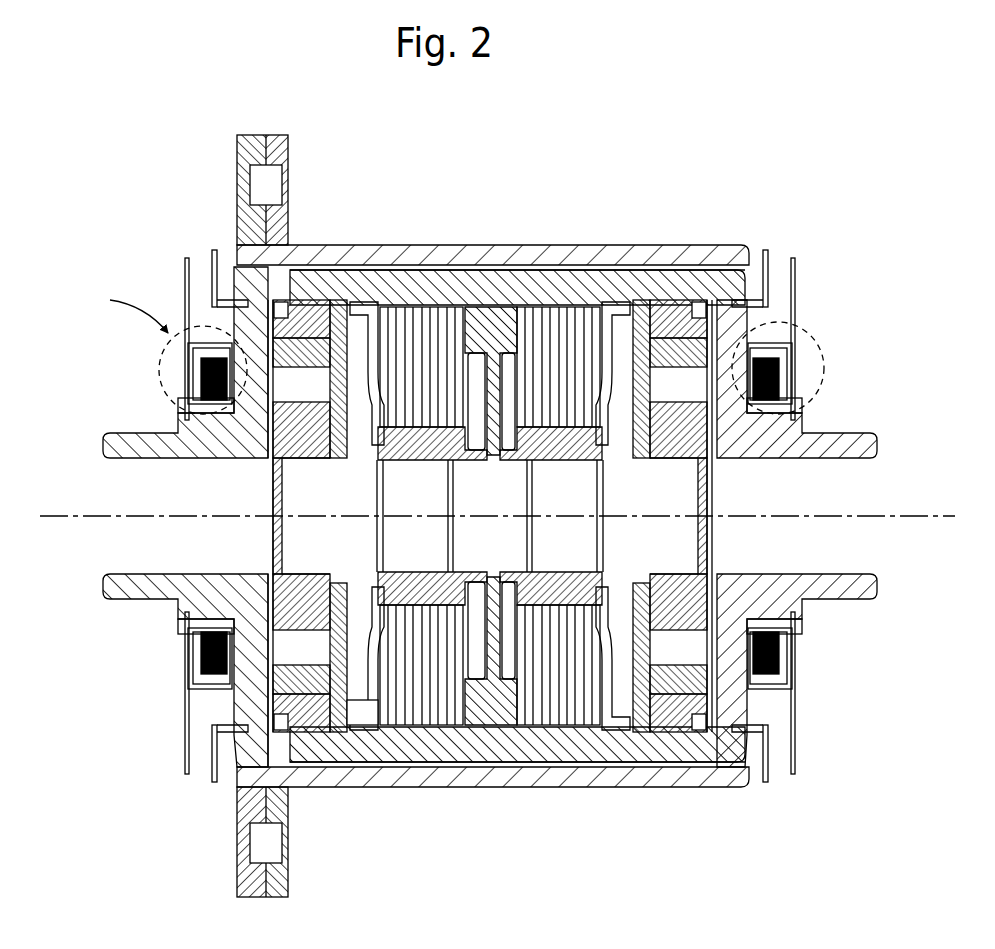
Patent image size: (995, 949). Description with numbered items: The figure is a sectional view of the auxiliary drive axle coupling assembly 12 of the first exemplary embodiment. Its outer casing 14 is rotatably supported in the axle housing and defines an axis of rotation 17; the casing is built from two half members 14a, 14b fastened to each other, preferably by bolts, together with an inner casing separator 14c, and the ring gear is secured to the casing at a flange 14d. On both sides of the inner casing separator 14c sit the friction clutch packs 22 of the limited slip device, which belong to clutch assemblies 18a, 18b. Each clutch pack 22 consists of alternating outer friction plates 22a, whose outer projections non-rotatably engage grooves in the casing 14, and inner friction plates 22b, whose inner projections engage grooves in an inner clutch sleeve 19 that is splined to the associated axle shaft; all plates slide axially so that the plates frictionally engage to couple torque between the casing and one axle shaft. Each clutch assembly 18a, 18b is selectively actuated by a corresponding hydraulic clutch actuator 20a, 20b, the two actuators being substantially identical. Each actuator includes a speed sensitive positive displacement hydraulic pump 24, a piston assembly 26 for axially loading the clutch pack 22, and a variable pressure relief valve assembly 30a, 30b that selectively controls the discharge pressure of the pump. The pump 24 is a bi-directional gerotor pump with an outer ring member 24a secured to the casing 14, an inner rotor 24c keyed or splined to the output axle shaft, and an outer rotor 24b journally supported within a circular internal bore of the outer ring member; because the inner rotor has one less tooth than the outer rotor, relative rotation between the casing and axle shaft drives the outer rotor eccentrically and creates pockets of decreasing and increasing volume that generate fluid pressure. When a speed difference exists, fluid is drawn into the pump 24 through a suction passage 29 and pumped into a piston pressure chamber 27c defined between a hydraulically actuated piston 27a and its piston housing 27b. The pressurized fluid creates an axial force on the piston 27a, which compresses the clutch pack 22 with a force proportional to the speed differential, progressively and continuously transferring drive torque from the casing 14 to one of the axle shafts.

The auxiliary drive axle coupling assembly 12 is at (522, 162).
The casing 14 is at (500, 246).
The half member 14a is at (182, 608).
The half member 14b is at (716, 770).
The inner casing separator 14c is at (535, 745).
The flange 14d is at (290, 880).
The axis of rotation 17 is at (80, 516).
The clutch assembly 18a is at (410, 300).
The clutch assembly 18b is at (598, 300).
The inner clutch sleeve 19 is at (410, 462).
The hydraulic clutch actuator 20a is at (366, 300).
The hydraulic clutch actuator 20b is at (690, 288).
The friction clutch pack 22 is at (443, 300).
The outer friction plate 22a is at (395, 727).
The inner friction plate 22b is at (432, 570).
The speed sensitive positive displacement hydraulic pump 24 is at (262, 440).
The outer ring member 24a is at (303, 728).
The outer rotor 24b is at (490, 516).
The inner rotor 24c is at (318, 438).
The piston assembly 26 is at (343, 582).
The piston 27a is at (491, 516).
The piston housing 27b is at (628, 800).
The piston pressure chamber 27c is at (350, 692).
The suction passage 29 is at (235, 742).
The variable pressure relief valve assembly 30a is at (150, 371).
The variable pressure relief valve assembly 30b is at (820, 334).